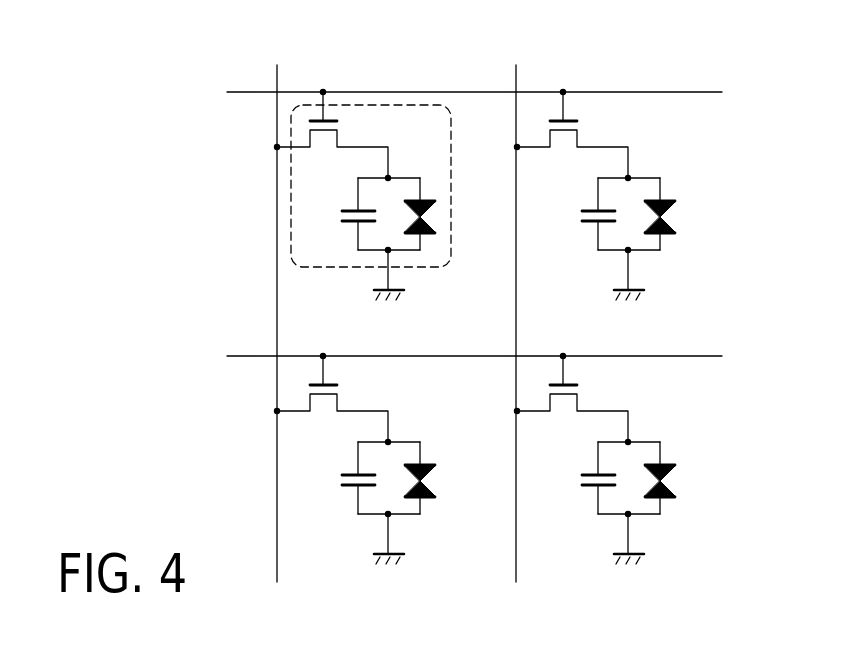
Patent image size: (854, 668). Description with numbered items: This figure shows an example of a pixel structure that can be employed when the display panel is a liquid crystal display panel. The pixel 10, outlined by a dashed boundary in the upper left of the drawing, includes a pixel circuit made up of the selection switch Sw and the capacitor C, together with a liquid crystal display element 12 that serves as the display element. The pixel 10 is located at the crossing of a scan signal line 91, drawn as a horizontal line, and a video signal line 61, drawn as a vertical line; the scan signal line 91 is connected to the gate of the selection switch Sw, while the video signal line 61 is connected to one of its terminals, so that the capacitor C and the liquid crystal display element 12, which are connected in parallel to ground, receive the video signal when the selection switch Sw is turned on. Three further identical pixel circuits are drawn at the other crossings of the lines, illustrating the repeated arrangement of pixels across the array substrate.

The video signal line 61 is at (277, 70).
The scan signal line 91 is at (237, 94).
The pixel 10 is at (381, 210).
The liquid crystal display element 12 is at (437, 216).
The selection switch Sw is at (324, 148).
The capacitor C is at (341, 218).